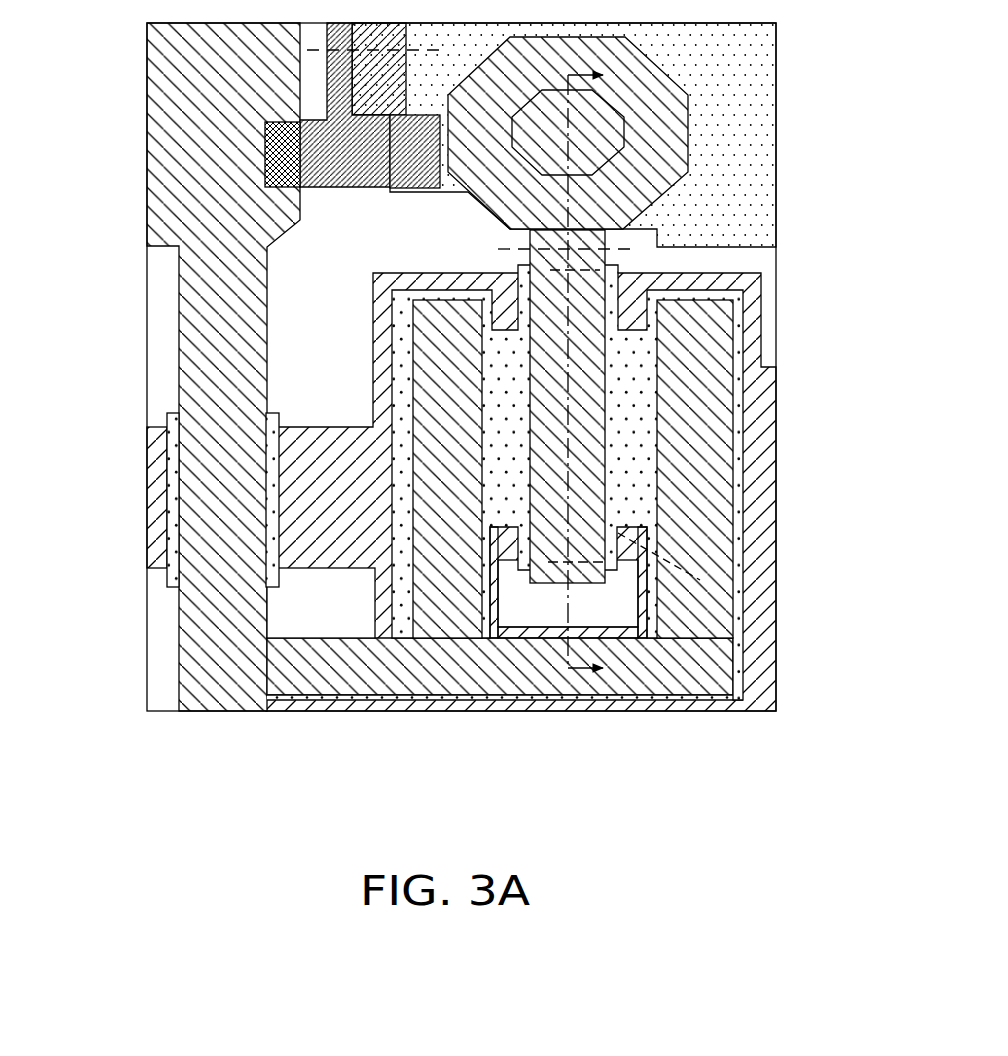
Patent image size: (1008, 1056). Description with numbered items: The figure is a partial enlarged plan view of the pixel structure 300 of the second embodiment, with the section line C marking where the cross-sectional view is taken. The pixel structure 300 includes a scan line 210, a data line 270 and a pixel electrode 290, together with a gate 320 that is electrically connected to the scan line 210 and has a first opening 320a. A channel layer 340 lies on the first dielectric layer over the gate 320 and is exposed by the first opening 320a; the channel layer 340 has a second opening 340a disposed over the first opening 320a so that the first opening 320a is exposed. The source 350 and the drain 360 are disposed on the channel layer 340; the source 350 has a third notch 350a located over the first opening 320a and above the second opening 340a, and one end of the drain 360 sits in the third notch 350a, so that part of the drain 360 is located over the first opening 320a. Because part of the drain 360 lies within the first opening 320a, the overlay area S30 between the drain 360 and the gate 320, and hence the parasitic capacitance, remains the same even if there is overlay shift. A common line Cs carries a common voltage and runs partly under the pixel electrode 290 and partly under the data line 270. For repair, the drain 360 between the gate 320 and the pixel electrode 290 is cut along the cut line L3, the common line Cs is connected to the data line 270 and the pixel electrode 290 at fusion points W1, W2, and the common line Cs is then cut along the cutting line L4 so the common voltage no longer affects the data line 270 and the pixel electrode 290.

The scan line 210 is at (155, 473).
The data line 270 is at (165, 203).
The pixel electrode 290 is at (758, 118).
The pixel structure 300 is at (795, 872).
The gate 320 is at (760, 663).
The first opening 320a is at (528, 638).
The overlay area S30 is at (750, 613).
The channel layer 340 is at (630, 507).
The second opening 340a is at (633, 638).
The source 350 is at (690, 465).
The third notch 350a is at (492, 640).
The drain 360 is at (587, 385).
The first width region W1 is at (430, 160).
The second width region W2 is at (302, 160).
The common line Cs is at (343, 172).
The cut line L3 is at (580, 262).
The cutting line L4 is at (389, 52).
The line C-C' C is at (601, 384).